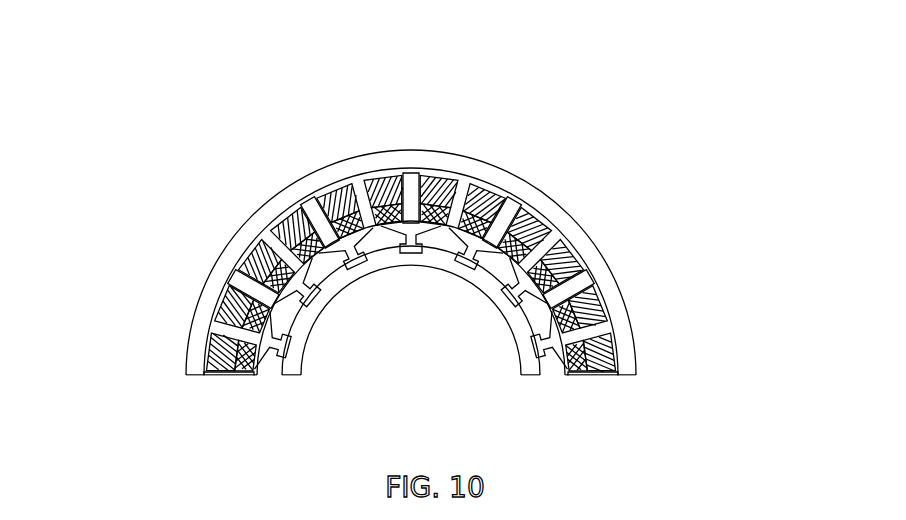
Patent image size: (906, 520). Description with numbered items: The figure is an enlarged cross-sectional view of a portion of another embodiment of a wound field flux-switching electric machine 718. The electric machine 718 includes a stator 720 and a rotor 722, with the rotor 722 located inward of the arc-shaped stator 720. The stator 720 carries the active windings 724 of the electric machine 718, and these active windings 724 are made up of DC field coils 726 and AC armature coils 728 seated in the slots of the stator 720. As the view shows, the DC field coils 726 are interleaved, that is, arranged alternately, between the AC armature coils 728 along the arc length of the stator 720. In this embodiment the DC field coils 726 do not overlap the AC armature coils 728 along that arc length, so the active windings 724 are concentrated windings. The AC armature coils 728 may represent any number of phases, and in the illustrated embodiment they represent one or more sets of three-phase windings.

The electric machine 718 is at (637, 125).
The stator 720 is at (205, 261).
The rotor 722 is at (525, 380).
The active windings 724 is at (520, 212).
The DC field coils 726 is at (248, 243).
The AC armature coils 728 is at (250, 272).